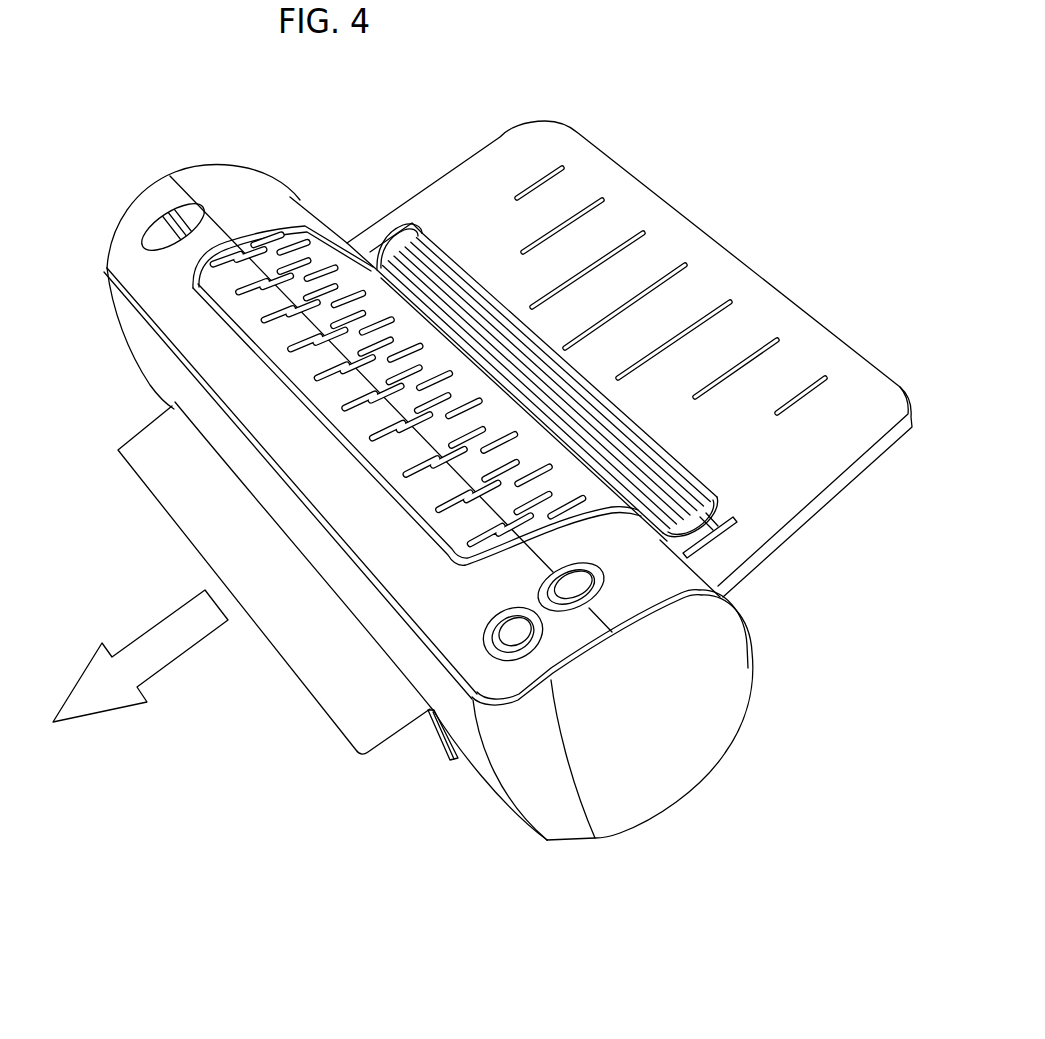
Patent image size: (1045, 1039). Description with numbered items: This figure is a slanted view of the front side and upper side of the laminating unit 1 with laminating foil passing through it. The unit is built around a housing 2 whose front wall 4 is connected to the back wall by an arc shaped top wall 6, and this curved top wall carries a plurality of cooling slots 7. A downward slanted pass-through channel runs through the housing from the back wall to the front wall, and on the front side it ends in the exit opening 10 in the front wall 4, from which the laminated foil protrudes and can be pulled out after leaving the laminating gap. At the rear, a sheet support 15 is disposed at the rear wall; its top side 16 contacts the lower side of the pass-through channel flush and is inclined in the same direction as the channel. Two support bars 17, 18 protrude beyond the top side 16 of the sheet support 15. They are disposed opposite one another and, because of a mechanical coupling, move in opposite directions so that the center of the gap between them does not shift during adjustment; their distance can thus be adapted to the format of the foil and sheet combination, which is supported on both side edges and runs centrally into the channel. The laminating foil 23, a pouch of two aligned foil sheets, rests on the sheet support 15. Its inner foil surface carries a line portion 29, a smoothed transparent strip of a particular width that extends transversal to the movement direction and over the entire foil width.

The laminating unit 1 is at (735, 112).
The housing 2 is at (757, 676).
The front wall 4 is at (480, 773).
The arc shaped top wall 6 is at (133, 243).
The cooling slots 7 is at (282, 228).
The exit opening 10 is at (170, 399).
The sheet support 15 is at (580, 132).
The top side 16 is at (746, 283).
The support bar 17 is at (697, 508).
The support bar 18 is at (397, 244).
The laminating foil 23 is at (693, 460).
The line portion 29 is at (550, 333).